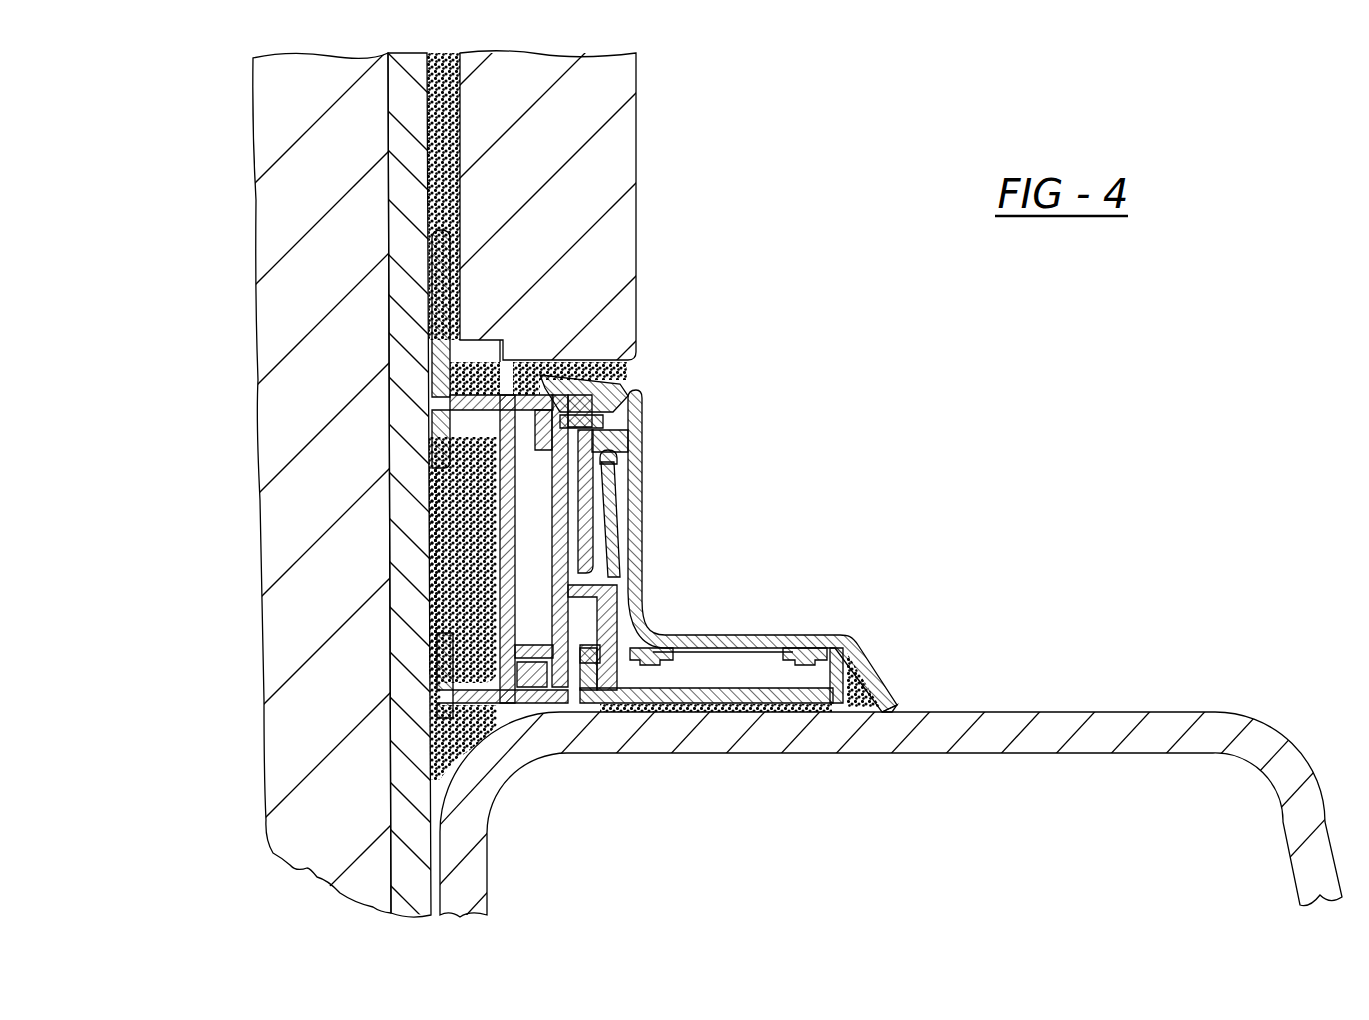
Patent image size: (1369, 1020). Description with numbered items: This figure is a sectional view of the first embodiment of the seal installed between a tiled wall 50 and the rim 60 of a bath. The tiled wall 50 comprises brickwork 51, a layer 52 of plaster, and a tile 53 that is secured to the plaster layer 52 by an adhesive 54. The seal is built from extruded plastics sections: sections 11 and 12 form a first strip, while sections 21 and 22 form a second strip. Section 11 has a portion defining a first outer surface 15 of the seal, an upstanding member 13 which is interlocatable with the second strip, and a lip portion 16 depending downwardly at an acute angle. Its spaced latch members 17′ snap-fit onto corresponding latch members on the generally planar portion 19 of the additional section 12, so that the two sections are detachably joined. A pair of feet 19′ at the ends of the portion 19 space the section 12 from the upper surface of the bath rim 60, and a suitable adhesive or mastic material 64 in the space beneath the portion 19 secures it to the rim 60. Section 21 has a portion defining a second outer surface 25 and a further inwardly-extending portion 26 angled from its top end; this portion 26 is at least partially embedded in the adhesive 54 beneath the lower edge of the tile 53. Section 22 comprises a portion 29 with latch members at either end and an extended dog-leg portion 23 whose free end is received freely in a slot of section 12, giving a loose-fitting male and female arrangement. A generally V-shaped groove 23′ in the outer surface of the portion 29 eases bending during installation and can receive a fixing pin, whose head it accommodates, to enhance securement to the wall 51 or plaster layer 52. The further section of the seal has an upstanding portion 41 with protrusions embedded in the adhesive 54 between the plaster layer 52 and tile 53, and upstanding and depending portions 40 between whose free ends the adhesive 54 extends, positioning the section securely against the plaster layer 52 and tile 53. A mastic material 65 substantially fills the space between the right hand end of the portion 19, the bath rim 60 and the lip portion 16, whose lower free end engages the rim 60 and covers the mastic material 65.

The section 11 is at (710, 662).
The additional section 12 is at (750, 668).
The upstanding member 13 is at (640, 527).
The first outer surface 15 is at (743, 633).
The lip portion 16 is at (893, 705).
The latch members 17′ is at (677, 655).
The planar portion 19 is at (777, 700).
The feet 19′ is at (597, 700).
The section 21 is at (645, 508).
The additional section 22 is at (617, 595).
The dog-leg portion 23 is at (585, 705).
The V-shaped groove 23′ is at (565, 487).
The second outer surface 25 is at (630, 478).
The inwardly-extending portion 26 is at (626, 401).
The portion 29 is at (557, 533).
The upstanding portion 40 is at (437, 432).
The upstanding portion 41 is at (437, 295).
The tiled wall 50 is at (250, 503).
The brickwork 51 is at (297, 392).
The plaster layer 52 is at (397, 242).
The tile 53 is at (635, 70).
The adhesive 54 is at (453, 128).
The bath rim 60 is at (887, 740).
The adhesive or mastic material 64 is at (730, 702).
The mastic material 65 is at (873, 682).